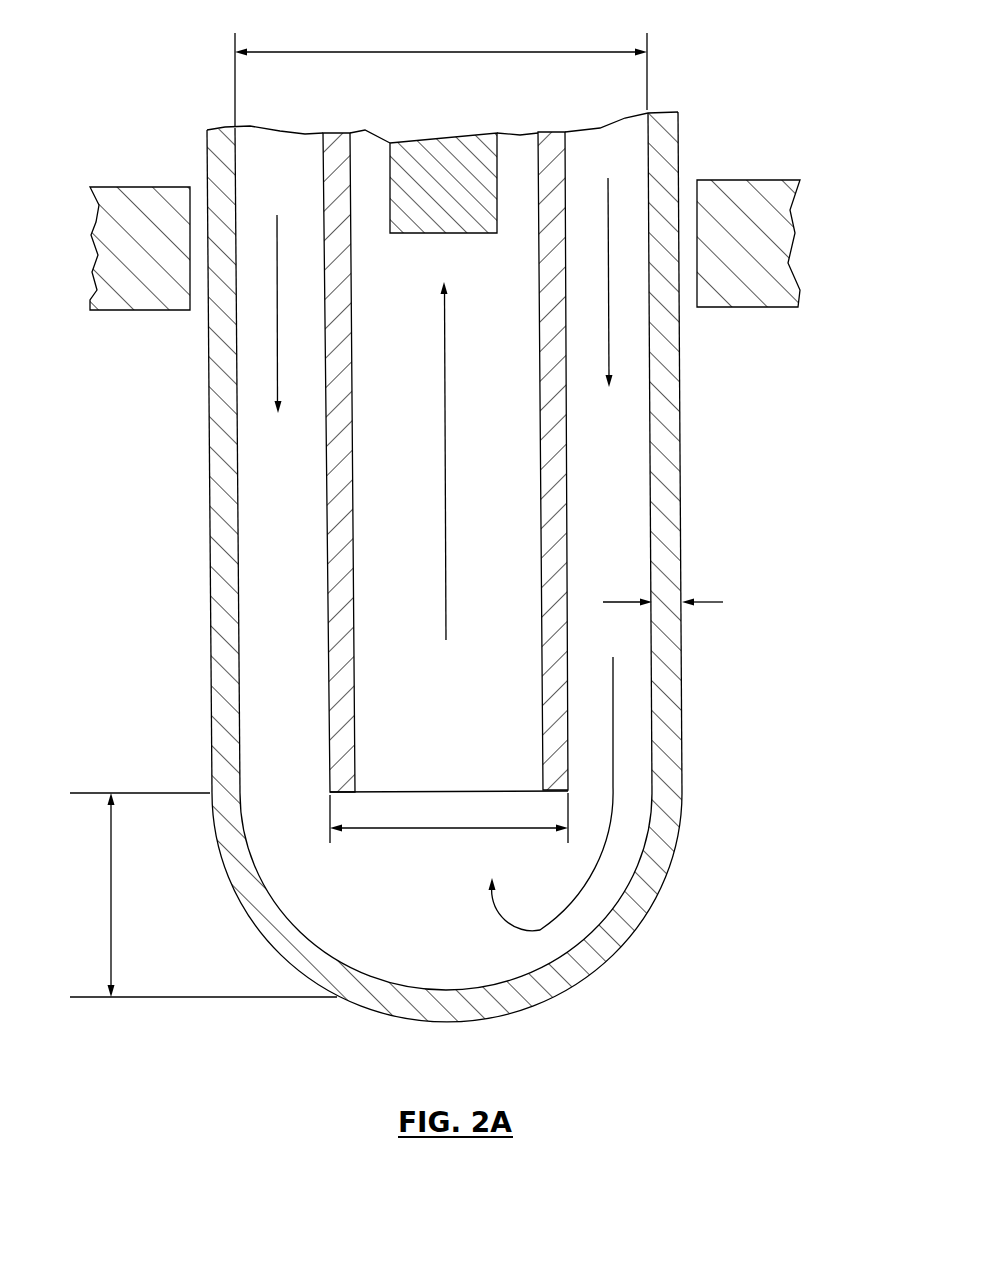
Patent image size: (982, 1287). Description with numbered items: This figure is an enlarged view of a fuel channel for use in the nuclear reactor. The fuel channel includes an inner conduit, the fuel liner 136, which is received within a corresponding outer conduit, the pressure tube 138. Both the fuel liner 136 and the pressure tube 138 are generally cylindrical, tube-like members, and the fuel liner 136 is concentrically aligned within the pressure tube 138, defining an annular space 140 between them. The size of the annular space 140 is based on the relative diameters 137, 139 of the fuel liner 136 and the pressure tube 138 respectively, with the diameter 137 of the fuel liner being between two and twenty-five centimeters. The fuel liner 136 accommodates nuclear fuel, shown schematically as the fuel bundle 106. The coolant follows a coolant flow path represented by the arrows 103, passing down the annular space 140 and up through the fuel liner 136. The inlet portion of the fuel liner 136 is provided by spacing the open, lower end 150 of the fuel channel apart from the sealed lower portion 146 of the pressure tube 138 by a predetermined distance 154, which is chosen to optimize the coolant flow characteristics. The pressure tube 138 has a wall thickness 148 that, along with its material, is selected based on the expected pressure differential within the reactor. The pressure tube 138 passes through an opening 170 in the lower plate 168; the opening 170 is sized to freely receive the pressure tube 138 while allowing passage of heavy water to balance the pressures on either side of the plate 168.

The arrows 103 is at (446, 347).
The fuel bundle 106 is at (457, 150).
The fuel liner 136 is at (552, 462).
The diameter 137 is at (460, 830).
The pressure tube 138 is at (393, 578).
The diameter 139 is at (422, 52).
The annular space 140 is at (280, 513).
The sealed lower portion 146 is at (533, 997).
The wall thickness 148 is at (702, 600).
The open lower end 150 is at (560, 760).
The distance 154 is at (112, 893).
The plate 168 is at (737, 197).
The openings 170 is at (197, 192).